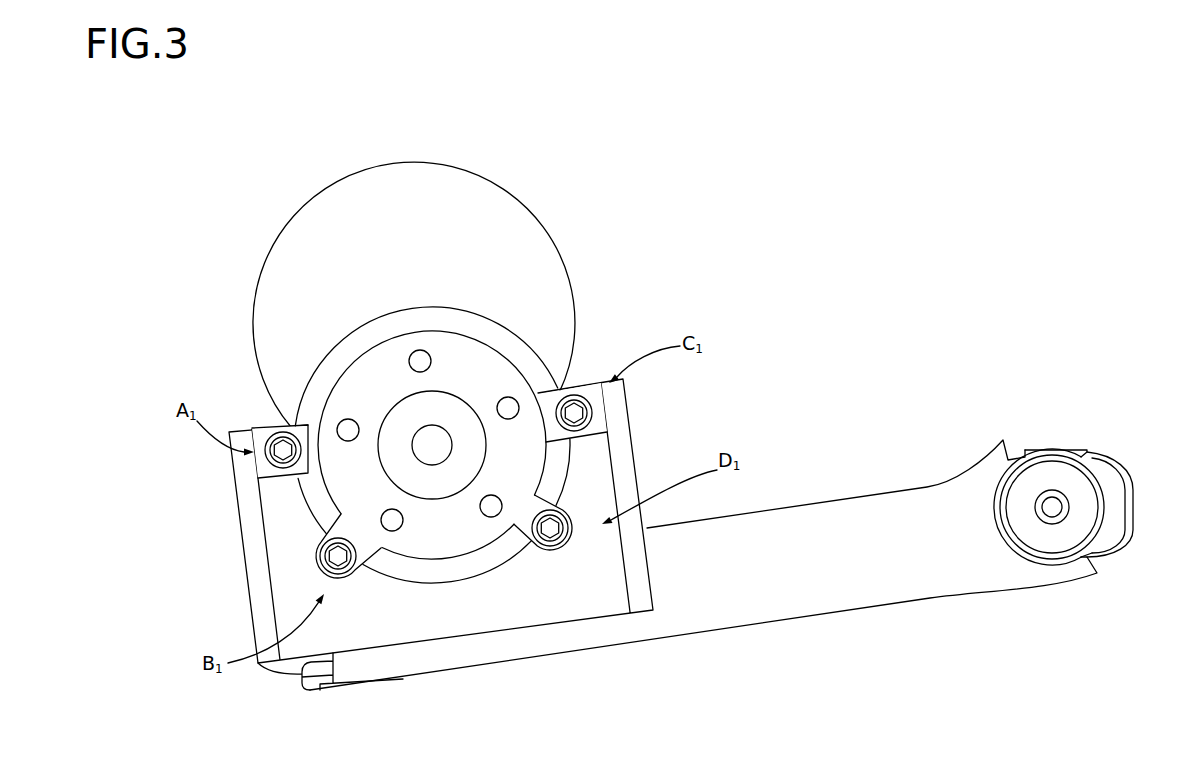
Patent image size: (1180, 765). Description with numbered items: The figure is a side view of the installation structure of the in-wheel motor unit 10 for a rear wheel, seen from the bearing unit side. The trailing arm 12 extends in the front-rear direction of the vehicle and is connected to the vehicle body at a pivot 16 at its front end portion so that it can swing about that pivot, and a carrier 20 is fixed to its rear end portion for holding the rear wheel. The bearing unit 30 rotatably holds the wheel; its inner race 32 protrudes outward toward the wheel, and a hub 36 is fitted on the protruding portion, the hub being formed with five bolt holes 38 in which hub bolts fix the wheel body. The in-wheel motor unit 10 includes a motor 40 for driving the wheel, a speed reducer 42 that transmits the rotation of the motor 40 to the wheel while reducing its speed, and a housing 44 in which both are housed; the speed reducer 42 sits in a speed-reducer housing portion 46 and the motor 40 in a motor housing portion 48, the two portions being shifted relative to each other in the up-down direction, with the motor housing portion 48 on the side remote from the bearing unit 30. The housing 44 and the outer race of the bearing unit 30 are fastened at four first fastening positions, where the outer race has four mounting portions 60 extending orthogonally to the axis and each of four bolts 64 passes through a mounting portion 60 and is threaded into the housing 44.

The in-wheel motor unit 10 is at (649, 395).
The trailing arm 12 is at (1020, 582).
The pivot 16 is at (1058, 449).
The carrier 20 is at (260, 611).
The bearing unit 30 is at (524, 338).
The inner race 32 is at (410, 427).
The hub 36 is at (485, 366).
The bolt hole 38 is at (424, 351).
The motor 40 is at (413, 187).
The speed reducer 42 is at (363, 337).
The housing 44 is at (592, 128).
The speed-reducer housing portion 46 is at (442, 317).
The motor housing portion 48 is at (478, 193).
The mounting portion 60 is at (300, 467).
The bolt 64 is at (574, 412).